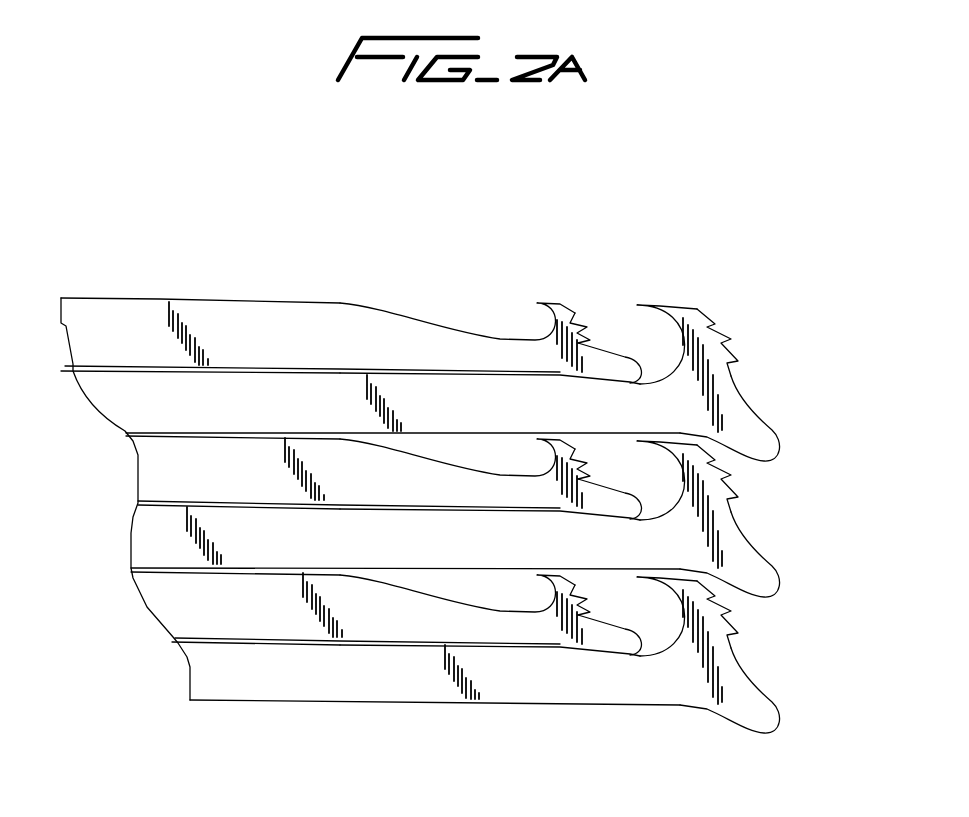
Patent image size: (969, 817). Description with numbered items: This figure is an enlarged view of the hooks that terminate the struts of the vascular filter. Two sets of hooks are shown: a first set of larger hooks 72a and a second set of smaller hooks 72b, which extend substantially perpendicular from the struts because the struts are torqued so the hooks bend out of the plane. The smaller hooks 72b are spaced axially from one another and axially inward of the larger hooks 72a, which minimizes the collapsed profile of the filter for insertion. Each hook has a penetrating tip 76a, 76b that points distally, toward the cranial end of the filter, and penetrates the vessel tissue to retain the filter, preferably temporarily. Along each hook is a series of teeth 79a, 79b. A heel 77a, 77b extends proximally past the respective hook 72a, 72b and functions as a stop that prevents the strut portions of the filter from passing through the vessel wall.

The first set of hooks 72a is at (746, 501).
The penetrating tip 76a is at (640, 305).
The heel 77a is at (757, 442).
The series of teeth 79a is at (730, 338).
The second set of hooks 72b is at (524, 498).
The penetrating tip 76b is at (547, 302).
The heel 77b is at (613, 500).
The series of teeth 79b is at (592, 315).